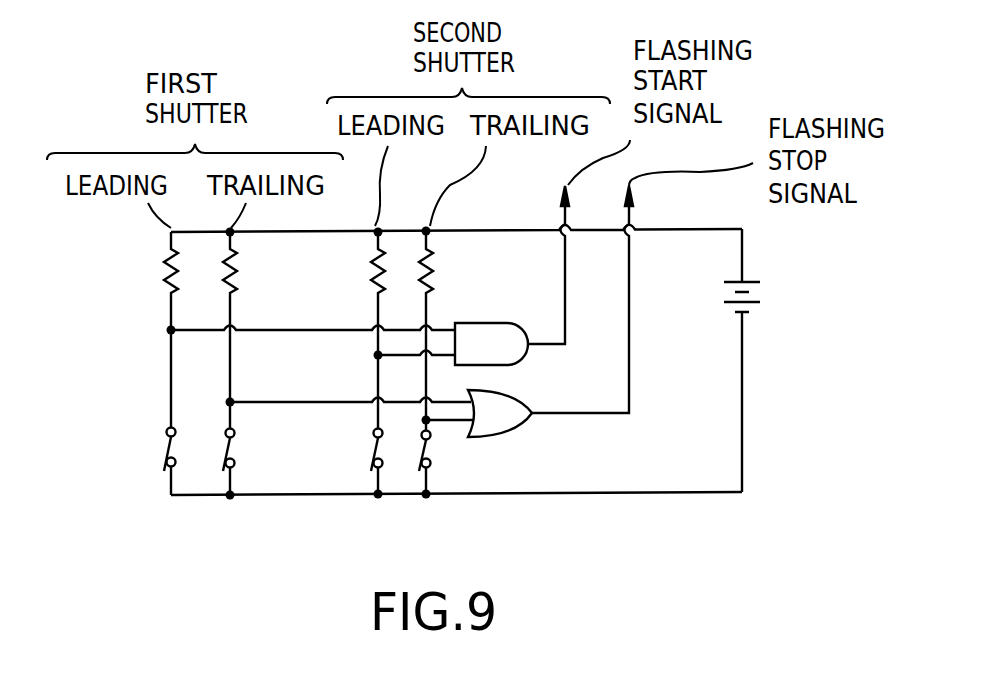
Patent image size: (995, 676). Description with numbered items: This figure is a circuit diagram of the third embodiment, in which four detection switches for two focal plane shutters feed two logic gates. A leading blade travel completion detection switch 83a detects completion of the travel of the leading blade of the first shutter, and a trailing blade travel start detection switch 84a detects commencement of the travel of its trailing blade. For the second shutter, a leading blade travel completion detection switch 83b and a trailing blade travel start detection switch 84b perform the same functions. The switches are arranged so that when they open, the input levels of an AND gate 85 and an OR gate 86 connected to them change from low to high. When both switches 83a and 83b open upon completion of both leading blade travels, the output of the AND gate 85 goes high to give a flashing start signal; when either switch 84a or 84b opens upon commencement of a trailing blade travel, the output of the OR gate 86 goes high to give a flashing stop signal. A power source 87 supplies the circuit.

The leading blade travel completion detection switch 83a is at (165, 447).
The trailing blade travel start detection switch 84a is at (235, 448).
The leading blade travel completion detection switch 83b is at (370, 450).
The trailing blade travel start detection switch 84b is at (432, 445).
The AND gate 85 is at (480, 320).
The OR gate 86 is at (527, 397).
The power source 87 is at (758, 288).